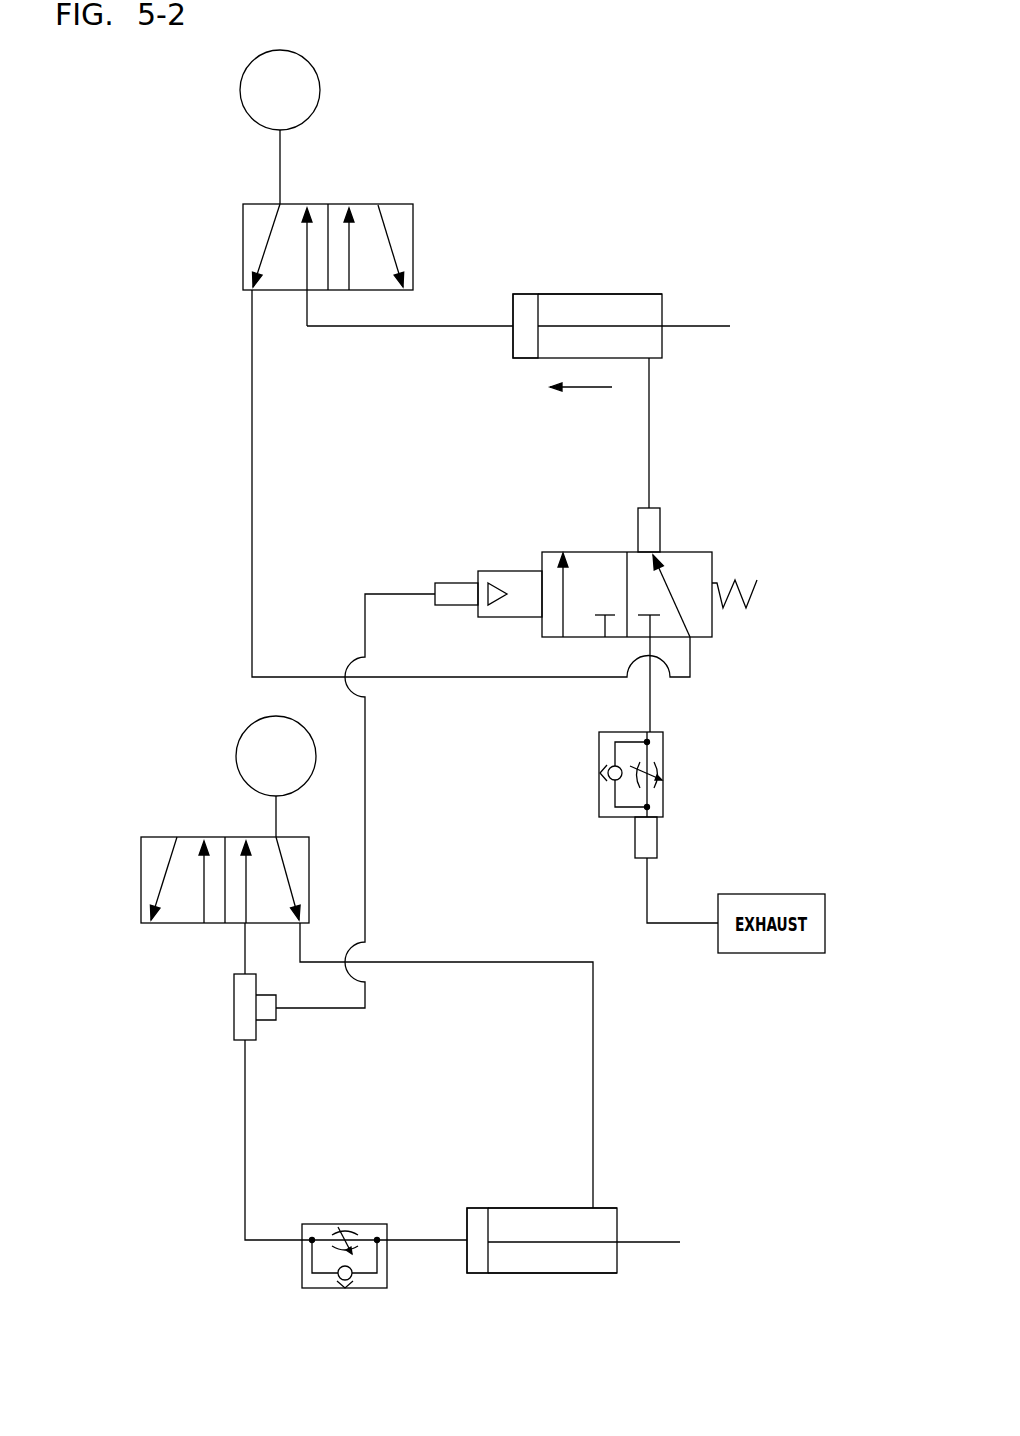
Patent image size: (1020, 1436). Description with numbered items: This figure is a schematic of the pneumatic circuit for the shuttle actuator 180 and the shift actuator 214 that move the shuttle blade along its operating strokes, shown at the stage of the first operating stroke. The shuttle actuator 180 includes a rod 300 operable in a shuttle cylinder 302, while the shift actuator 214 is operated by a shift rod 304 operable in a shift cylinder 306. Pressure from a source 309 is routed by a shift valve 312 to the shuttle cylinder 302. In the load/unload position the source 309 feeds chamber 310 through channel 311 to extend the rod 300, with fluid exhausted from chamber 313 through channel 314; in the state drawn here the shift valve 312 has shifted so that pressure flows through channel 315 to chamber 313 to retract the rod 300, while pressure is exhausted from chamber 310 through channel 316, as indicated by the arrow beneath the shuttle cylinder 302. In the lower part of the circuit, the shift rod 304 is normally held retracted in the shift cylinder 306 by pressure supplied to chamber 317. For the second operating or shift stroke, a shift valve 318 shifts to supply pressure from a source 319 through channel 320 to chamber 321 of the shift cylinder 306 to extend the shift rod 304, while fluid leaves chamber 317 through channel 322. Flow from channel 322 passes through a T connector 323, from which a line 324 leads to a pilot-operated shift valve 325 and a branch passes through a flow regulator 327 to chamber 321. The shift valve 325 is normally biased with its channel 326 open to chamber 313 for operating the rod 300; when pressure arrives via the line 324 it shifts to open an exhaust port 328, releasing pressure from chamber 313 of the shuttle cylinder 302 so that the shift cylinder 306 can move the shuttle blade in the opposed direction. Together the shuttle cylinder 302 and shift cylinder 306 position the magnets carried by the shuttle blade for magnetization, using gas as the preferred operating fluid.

The shuttle actuator 180 is at (638, 277).
The shift actuator 214 is at (610, 1200).
The rod 300 is at (697, 327).
The shuttle cylinder 302 is at (563, 298).
The shift rod 304 is at (653, 1245).
The shift cylinder 306 is at (506, 1220).
The source 309 is at (303, 58).
The chamber 310 is at (527, 345).
The channel 311 is at (393, 240).
The shift valve 312 is at (393, 197).
The chamber 313 is at (652, 352).
The channel 314 is at (348, 265).
The channel 315 is at (270, 237).
The channel 316 is at (307, 268).
The chamber 317 is at (583, 1270).
The shift valve 318 is at (150, 837).
The source 319 is at (232, 755).
The channel 320 is at (165, 872).
The chamber 321 is at (472, 1262).
The channel 322 is at (202, 903).
The T connector 323 is at (230, 1018).
The line 324 is at (382, 594).
The shift valve 325 is at (710, 547).
The channel 326 is at (670, 593).
The flow regulator 327 is at (352, 1225).
The exhaust port 328 is at (563, 587).